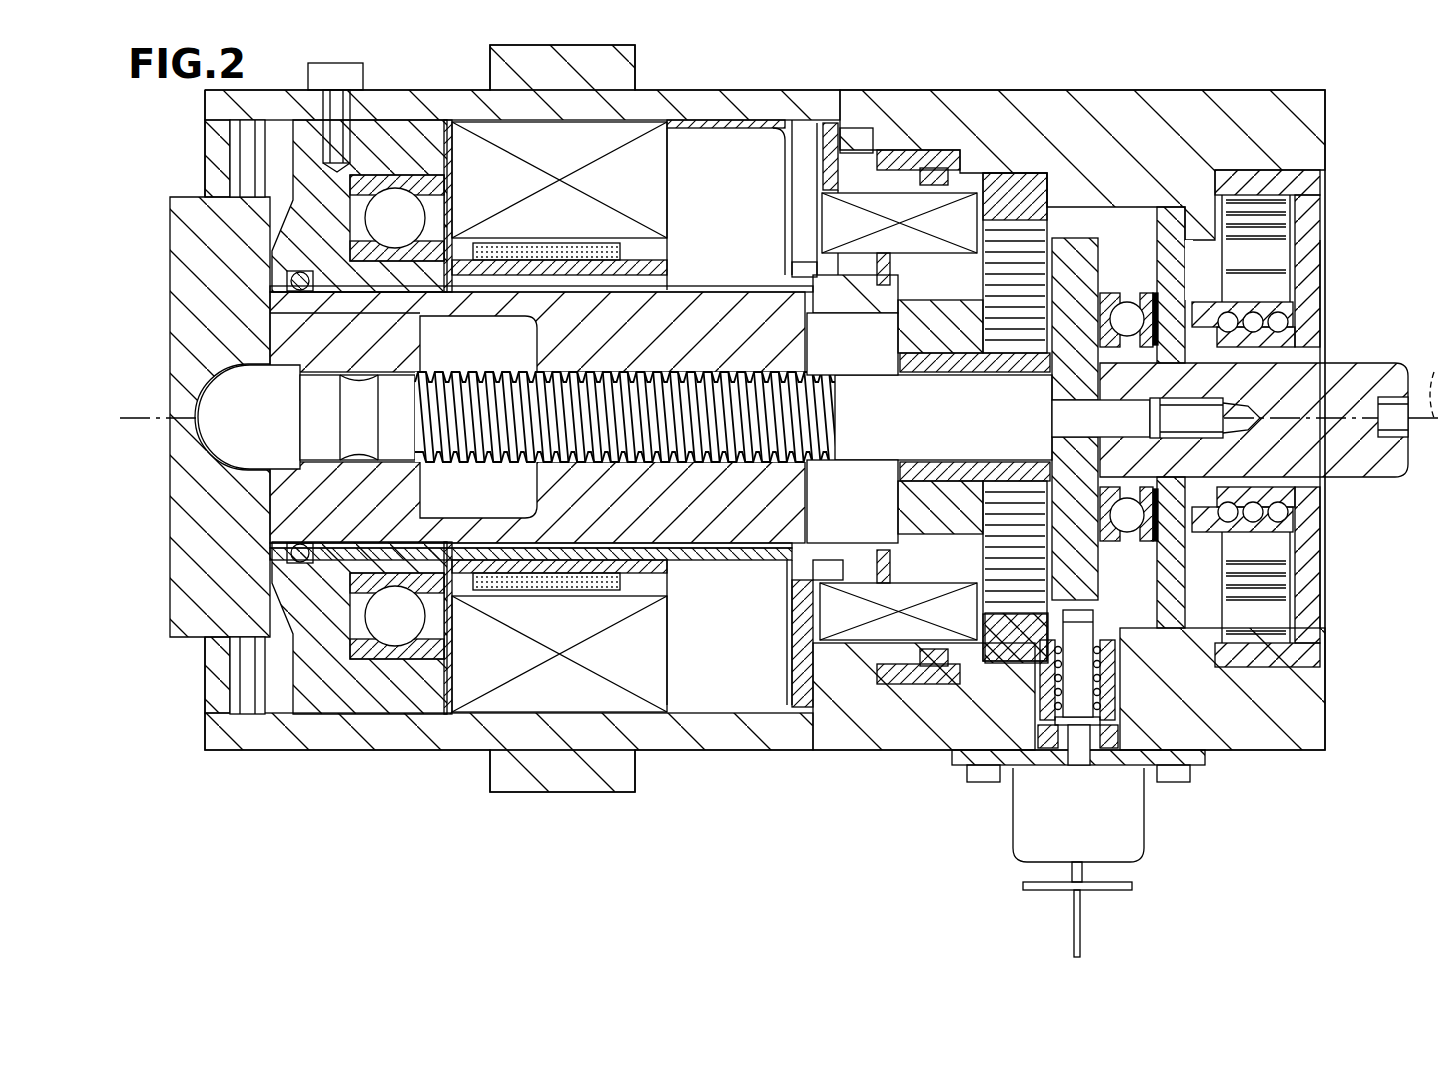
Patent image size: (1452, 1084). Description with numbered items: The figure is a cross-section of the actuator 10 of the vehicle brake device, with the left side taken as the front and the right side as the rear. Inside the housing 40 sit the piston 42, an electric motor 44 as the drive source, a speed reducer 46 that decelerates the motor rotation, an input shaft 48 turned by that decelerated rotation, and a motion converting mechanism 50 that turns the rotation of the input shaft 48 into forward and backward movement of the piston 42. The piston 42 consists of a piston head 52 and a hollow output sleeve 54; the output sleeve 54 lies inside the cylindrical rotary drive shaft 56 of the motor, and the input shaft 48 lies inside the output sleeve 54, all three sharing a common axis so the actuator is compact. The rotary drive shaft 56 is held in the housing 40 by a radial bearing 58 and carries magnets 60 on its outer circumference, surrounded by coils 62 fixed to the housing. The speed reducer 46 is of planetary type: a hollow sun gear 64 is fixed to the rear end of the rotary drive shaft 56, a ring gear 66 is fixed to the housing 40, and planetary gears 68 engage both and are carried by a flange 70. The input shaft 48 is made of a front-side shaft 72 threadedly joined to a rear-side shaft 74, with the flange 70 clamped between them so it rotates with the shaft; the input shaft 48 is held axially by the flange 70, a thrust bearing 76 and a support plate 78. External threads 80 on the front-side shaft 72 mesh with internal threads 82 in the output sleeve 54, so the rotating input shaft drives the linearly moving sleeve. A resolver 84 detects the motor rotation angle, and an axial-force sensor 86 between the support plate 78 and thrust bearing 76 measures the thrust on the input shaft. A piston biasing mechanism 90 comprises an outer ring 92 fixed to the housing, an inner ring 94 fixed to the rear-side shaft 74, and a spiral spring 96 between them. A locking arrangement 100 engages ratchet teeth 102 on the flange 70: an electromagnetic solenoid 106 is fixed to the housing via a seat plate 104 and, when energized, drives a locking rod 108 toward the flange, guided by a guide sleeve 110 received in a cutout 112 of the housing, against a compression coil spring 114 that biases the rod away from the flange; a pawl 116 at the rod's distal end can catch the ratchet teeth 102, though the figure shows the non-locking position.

The actuator 10 is at (415, 912).
The housing 40 is at (720, 770).
The piston 42 is at (190, 417).
The electric motor 44 is at (643, 107).
The speed reducer 46 is at (1016, 445).
The input shaft 48 is at (840, 355).
The motion converting mechanism 50 is at (707, 280).
The piston head 52 is at (178, 548).
The output sleeve 54 is at (453, 688).
The rotary drive shaft 56 is at (752, 552).
The radial bearing 58 is at (385, 190).
The magnets 60 is at (497, 530).
The coils 62 is at (571, 694).
The sun gear 64 is at (945, 655).
The ring gear 66 is at (1020, 650).
The planetary gears 68 is at (985, 625).
The flange 70 is at (1127, 300).
The front-side shaft 72 is at (915, 385).
The rear-side shaft 74 is at (1357, 360).
The thrust bearing 76 is at (1170, 230).
The support plate 78 is at (1210, 175).
The external threads 80 is at (765, 350).
The internal threads 82 is at (485, 250).
The resolver 84 is at (970, 170).
The axial-force sensor 86 is at (1257, 748).
The piston biasing mechanism 90 is at (1286, 372).
The outer ring 92 is at (1320, 175).
The inner ring 94 is at (1287, 307).
The spiral spring 96 is at (1282, 227).
The brake mechanism 100 is at (1070, 783).
The ratchet teeth 102 is at (1207, 760).
The seat plate 104 is at (1203, 765).
The electromagnetic solenoid 106 is at (1134, 878).
The locking rod 108 is at (1125, 850).
The guide sleeve 110 is at (1055, 690).
The cutout 112 is at (1085, 640).
The compression coil spring 114 is at (1048, 728).
The pawl 116 is at (1113, 687).